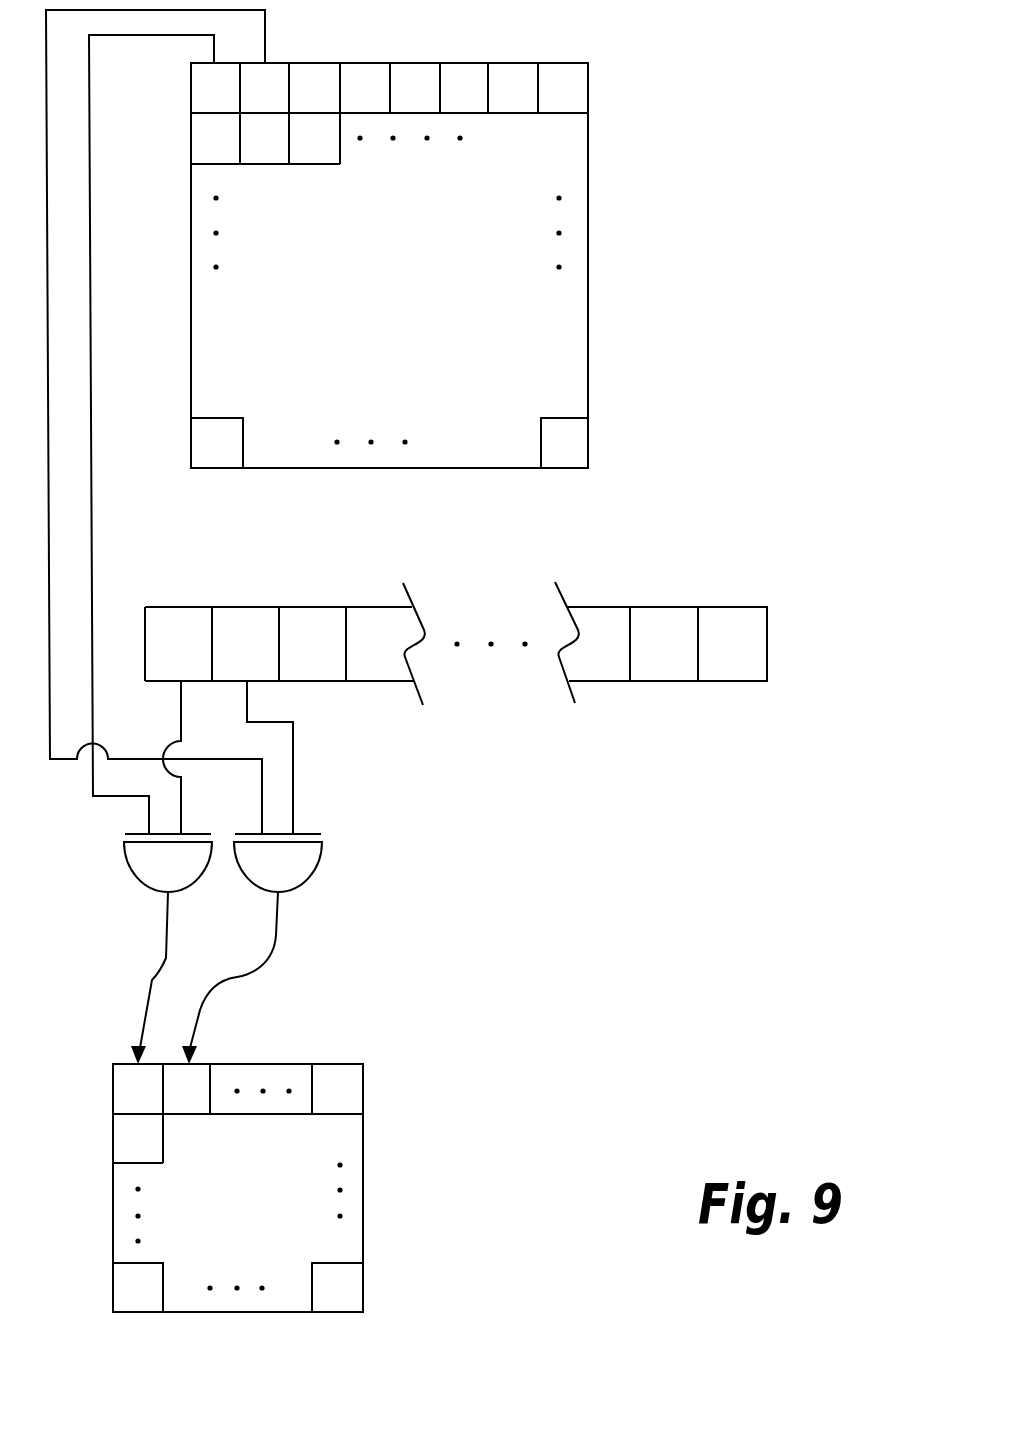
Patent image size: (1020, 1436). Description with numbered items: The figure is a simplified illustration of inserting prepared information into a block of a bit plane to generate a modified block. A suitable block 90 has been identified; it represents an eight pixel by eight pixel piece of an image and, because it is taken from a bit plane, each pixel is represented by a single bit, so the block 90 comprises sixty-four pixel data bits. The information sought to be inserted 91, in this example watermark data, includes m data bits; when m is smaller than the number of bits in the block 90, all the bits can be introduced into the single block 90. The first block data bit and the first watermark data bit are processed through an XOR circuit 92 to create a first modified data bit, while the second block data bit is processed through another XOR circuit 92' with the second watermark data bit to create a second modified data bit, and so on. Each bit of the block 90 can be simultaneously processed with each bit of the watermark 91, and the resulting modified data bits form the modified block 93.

The block 90 is at (588, 137).
The information sought to be inserted 91 is at (765, 585).
The XOR circuit 92 is at (134, 949).
The XOR circuit 92' is at (291, 931).
The modified block 93 is at (365, 1170).